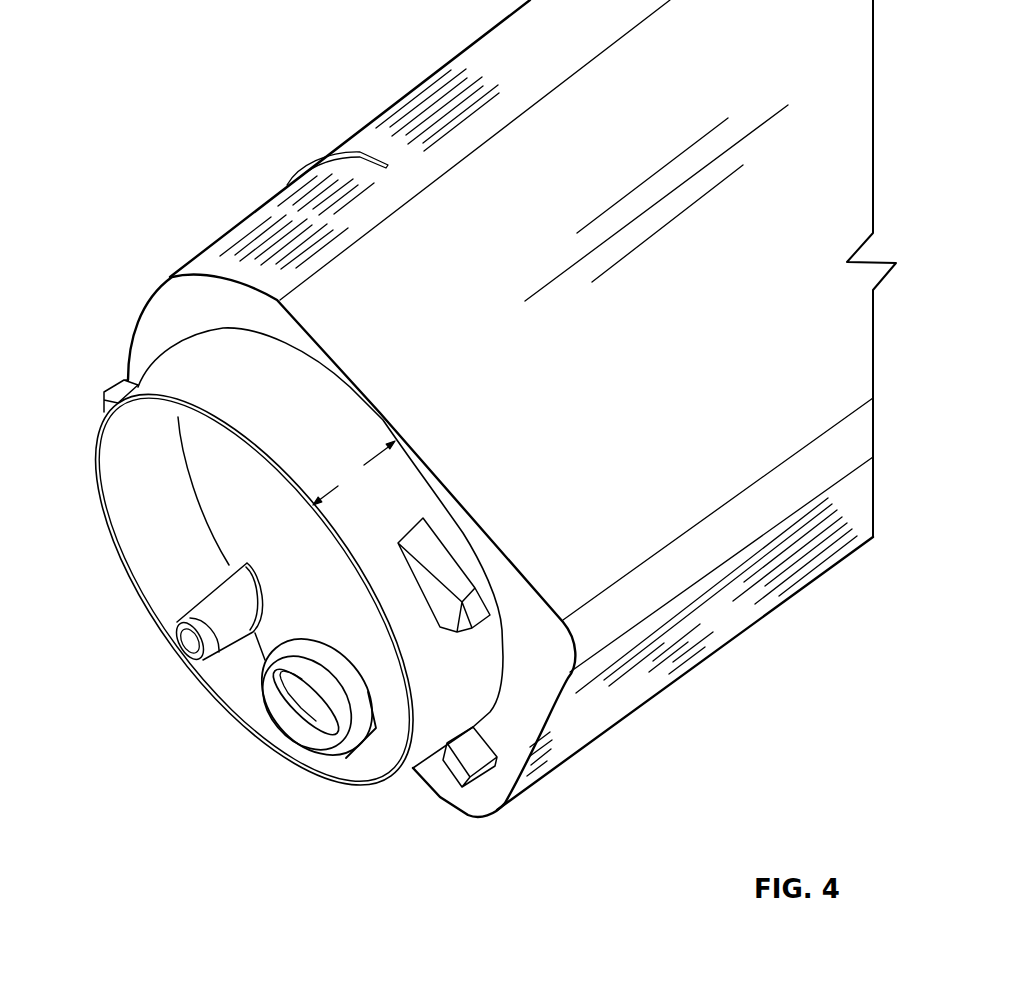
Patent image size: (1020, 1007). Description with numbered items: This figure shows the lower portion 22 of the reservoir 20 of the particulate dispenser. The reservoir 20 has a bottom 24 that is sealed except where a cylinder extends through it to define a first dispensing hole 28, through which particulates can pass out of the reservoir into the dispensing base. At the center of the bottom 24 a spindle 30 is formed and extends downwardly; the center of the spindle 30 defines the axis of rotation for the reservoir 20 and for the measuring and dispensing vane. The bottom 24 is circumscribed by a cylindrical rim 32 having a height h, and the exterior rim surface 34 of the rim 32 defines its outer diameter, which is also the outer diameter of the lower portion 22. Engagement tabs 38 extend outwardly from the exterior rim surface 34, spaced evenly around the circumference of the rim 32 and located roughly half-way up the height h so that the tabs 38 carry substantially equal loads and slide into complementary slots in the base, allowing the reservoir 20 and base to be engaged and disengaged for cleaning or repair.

The reservoir 20 is at (168, 83).
The lower portion 22 is at (587, 810).
The bottom 24 is at (250, 541).
The first dispensing hole 28 is at (322, 725).
The spindle 30 is at (190, 641).
The cylindrical rim 32 is at (100, 480).
The exterior rim surface 34 is at (257, 422).
The engagement tabs 38 is at (110, 392).